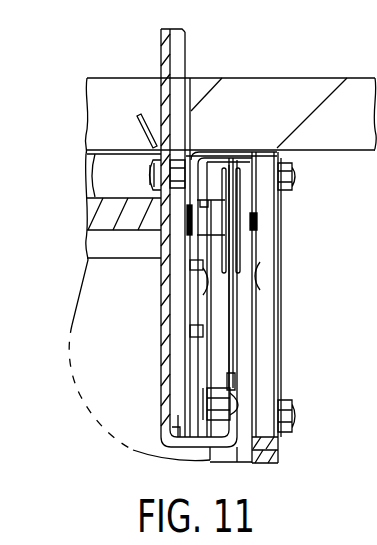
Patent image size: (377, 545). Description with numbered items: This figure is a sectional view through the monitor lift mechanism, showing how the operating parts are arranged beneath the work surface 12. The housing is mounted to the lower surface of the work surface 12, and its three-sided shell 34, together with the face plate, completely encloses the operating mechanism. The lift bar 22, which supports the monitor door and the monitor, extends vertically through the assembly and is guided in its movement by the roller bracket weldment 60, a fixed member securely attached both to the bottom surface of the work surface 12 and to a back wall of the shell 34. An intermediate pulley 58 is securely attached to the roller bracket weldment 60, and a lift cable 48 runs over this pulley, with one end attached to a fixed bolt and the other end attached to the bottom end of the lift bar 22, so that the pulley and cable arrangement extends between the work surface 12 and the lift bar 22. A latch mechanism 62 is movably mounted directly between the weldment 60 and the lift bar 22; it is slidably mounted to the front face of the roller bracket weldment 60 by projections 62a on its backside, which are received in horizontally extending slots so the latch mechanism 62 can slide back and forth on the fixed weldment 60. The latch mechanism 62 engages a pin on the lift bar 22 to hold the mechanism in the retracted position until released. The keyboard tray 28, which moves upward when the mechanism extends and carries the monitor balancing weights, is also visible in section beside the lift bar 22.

The work surface 12 is at (288, 78).
The lift bar 22 is at (163, 63).
The keyboard tray 28 is at (103, 200).
The shell 34 is at (278, 328).
The lift cable 48 is at (233, 349).
The intermediate pulley 58 is at (242, 190).
The roller bracket weldment 60 is at (238, 152).
The latch mechanism 62 is at (184, 307).
The projections 62a is at (192, 332).